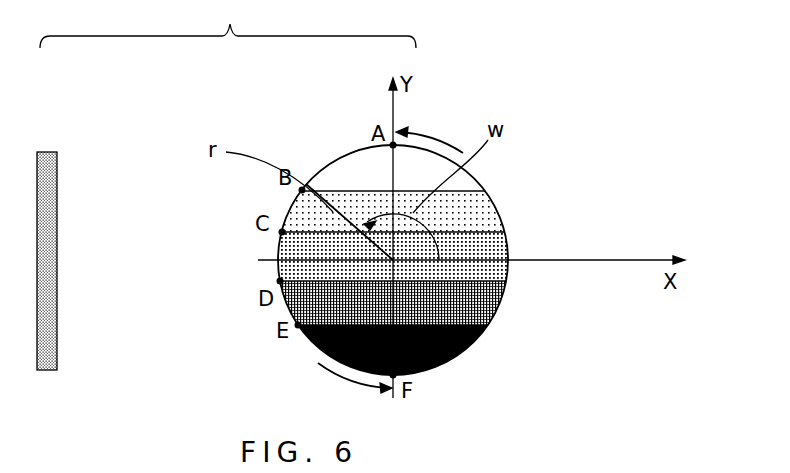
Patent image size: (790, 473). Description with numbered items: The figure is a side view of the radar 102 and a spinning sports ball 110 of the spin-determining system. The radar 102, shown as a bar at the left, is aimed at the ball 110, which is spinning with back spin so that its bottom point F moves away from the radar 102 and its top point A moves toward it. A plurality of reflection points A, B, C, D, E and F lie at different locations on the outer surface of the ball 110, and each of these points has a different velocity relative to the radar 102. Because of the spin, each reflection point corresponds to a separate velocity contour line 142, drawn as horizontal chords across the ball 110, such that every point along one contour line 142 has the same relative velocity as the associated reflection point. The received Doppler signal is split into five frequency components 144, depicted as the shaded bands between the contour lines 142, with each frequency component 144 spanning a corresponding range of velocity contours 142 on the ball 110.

The radar device 102 is at (45, 151).
The ball 110 is at (283, 217).
The velocity contour line 142 is at (361, 152).
The frequency component 144 is at (458, 182).